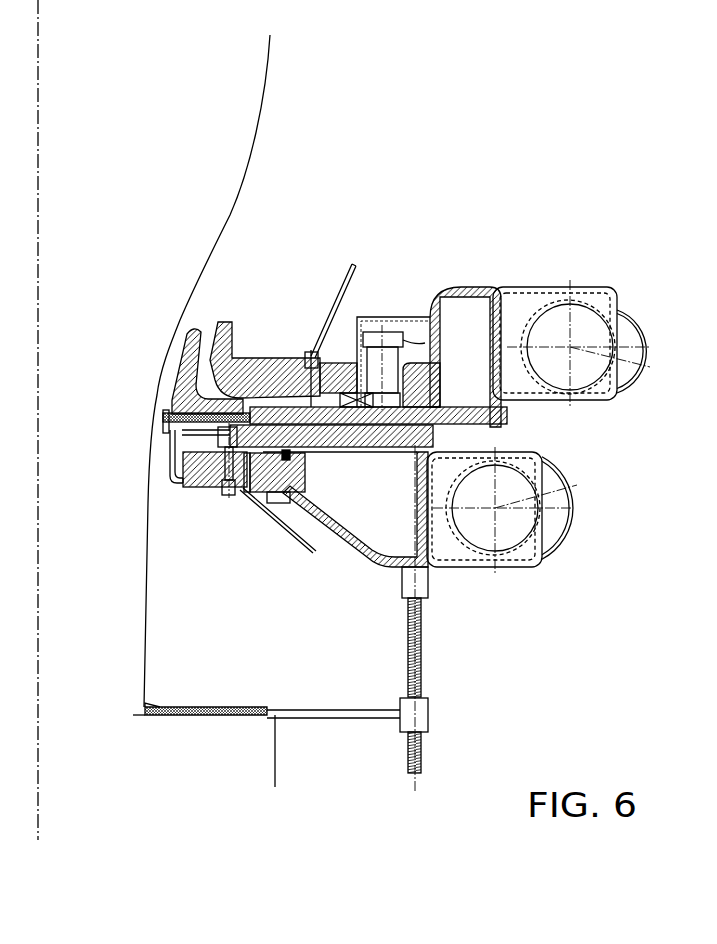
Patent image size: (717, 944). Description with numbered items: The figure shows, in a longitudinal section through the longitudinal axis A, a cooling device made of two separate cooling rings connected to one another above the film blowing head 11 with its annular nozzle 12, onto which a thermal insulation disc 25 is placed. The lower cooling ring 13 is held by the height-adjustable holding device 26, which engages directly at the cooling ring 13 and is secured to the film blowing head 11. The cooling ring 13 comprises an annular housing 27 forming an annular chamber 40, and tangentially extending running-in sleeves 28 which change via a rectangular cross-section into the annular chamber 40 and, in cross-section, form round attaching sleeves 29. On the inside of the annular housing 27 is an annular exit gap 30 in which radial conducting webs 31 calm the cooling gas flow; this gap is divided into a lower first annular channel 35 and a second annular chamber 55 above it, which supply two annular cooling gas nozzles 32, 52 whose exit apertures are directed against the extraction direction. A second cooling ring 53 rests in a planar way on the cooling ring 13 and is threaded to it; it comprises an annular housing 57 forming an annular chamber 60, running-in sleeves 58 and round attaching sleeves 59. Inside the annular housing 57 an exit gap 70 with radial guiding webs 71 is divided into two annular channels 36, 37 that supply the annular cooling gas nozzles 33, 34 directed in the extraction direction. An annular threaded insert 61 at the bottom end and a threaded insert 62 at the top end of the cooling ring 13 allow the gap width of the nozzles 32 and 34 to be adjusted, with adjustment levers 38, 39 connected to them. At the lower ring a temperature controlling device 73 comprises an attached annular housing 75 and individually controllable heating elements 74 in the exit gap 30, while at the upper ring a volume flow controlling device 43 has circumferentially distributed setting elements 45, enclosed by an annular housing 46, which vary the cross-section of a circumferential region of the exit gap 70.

The longitudinal axis A is at (38, 130).
The film blowing head 11 is at (275, 747).
The annular nozzle 12 is at (143, 763).
The cooling ring 13 is at (468, 617).
The thermal insulation disc 25 is at (208, 717).
The height-adjustable holding device 26 is at (428, 717).
The annular housing 27 is at (370, 573).
The running-in sleeves 28 is at (487, 567).
The attaching sleeves 29 is at (560, 530).
The annular exit gap 30 is at (260, 473).
The radial conducting webs 31 is at (267, 490).
The annular cooling gas nozzle 32 is at (177, 487).
The annular cooling gas nozzle 33 is at (167, 410).
The annular cooling gas nozzle 34 is at (210, 340).
The lower first annular channel 35 is at (228, 453).
The annular channel 36 is at (217, 417).
The annular channel 37 is at (260, 400).
The adjustment lever 38 is at (292, 530).
The adjustment lever 39 is at (342, 290).
The annular chamber 40 is at (397, 540).
The volume flow controlling device 43 is at (403, 290).
The setting elements 45 is at (380, 343).
The annular housing 46 is at (418, 317).
The annular cooling gas nozzle 52 is at (170, 453).
The second cooling ring 53 is at (513, 235).
The second annular chamber 55 is at (200, 435).
The annular housing 57 is at (470, 290).
The running-in sleeves 58 is at (540, 293).
The attaching sleeves 59 is at (627, 317).
The annular chamber 60 is at (480, 367).
The annular threaded insert 61 is at (240, 497).
The threaded insert 62 is at (292, 407).
The exit gap 70 is at (410, 400).
The radial guiding webs 71 is at (343, 362).
The temperature controlling device 73 is at (310, 477).
The heating elements 74 is at (290, 455).
The annular housing 75 is at (317, 552).